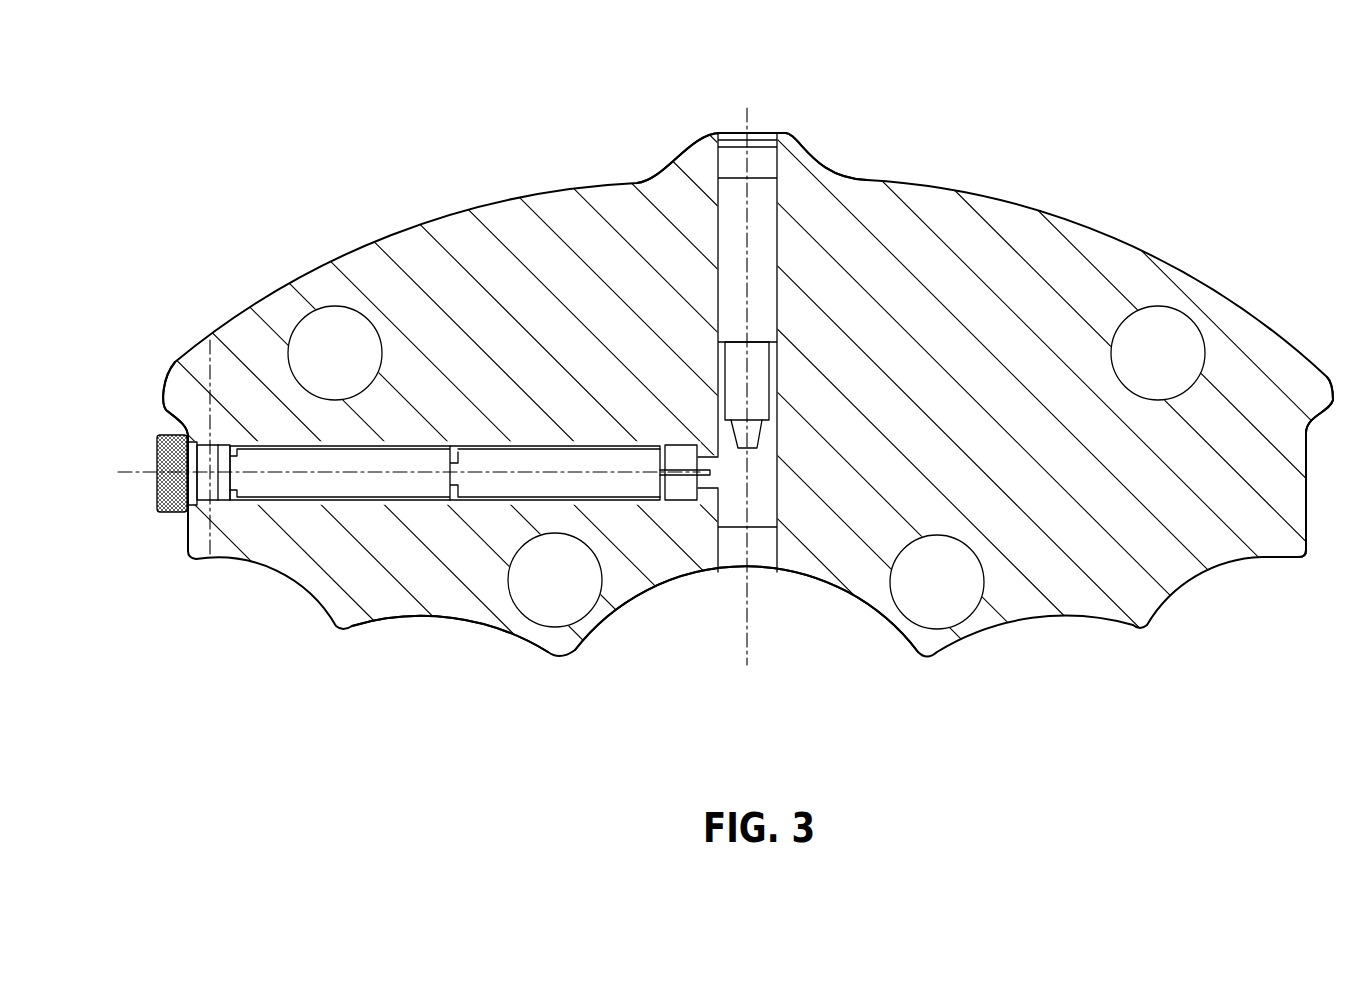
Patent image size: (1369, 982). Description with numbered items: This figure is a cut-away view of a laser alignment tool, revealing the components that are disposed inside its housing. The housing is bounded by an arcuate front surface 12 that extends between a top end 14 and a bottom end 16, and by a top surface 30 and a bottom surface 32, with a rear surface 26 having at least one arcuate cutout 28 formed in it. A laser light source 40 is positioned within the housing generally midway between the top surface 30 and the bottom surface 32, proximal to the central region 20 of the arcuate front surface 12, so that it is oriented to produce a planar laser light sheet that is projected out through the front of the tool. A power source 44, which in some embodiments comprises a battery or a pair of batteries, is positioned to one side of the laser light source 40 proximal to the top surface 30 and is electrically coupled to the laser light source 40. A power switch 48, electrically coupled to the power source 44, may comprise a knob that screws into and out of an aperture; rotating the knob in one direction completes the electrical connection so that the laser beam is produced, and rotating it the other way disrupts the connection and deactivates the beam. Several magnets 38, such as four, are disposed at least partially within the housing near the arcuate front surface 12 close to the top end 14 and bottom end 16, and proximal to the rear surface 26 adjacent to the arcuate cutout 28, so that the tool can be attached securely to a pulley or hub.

The arcuate front surface 12 is at (520, 195).
The top end 14 is at (163, 388).
The bottom end 16 is at (1330, 385).
The central region 20 is at (790, 133).
The rear surface 26 is at (463, 622).
The arcuate cutout 28 is at (727, 583).
The top surface 30 is at (188, 533).
The bottom surface 32 is at (1307, 510).
The magnet 38 is at (313, 337).
The laser light source 40 is at (755, 398).
The power source 44 is at (306, 485).
The power switch 48 is at (158, 472).